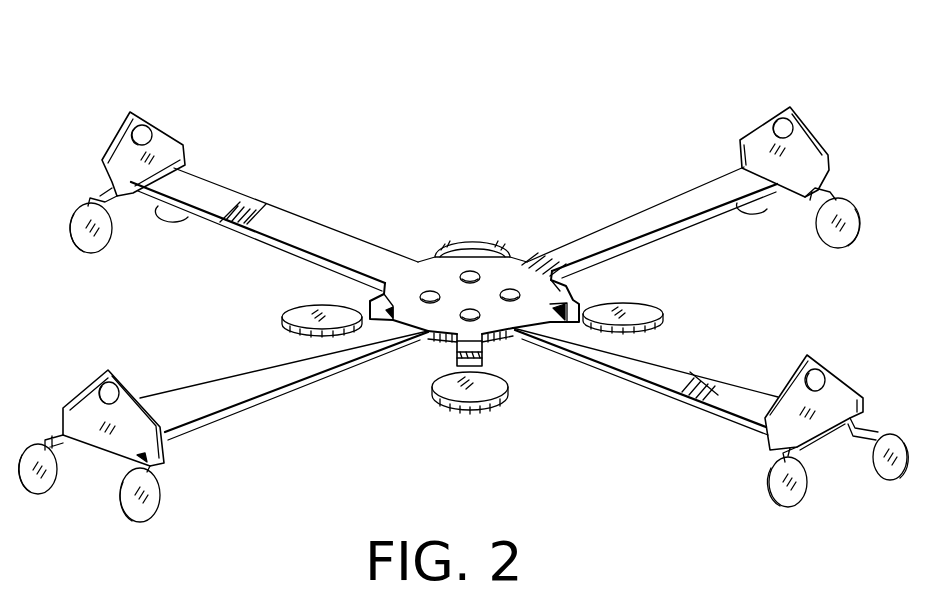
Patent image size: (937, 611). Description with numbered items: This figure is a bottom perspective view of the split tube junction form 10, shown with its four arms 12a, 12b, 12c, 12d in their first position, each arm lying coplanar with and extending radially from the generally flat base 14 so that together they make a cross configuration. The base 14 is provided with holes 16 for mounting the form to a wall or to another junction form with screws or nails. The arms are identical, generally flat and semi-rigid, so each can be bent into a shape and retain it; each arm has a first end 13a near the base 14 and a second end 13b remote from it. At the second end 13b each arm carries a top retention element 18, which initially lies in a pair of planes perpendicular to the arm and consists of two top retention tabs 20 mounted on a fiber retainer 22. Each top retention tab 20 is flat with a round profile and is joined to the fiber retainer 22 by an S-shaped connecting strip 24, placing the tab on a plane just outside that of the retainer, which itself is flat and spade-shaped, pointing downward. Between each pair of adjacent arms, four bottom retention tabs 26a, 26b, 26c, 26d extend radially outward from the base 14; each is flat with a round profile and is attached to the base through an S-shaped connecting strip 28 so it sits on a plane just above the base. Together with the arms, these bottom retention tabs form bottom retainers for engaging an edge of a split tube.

The split tube junction form 10 is at (562, 97).
The arm 12a is at (672, 203).
The arm 12b is at (660, 380).
The arm 12c is at (268, 225).
The arm 12d is at (286, 377).
The first end 13a is at (375, 338).
The second end 13b is at (186, 412).
The base 14 is at (441, 260).
The holes 16 is at (511, 294).
The top retention element 18 is at (84, 380).
The top retention tab 20 is at (52, 486).
The fiber retainer 22 is at (94, 403).
The S-shaped connecting strip 24 is at (47, 434).
The bottom retention tab 26a is at (660, 311).
The bottom retention tab 26b is at (482, 388).
The bottom retention tab 26c is at (465, 250).
The bottom retention tab 26d is at (293, 315).
The S-shaped connecting strip 28 is at (457, 340).